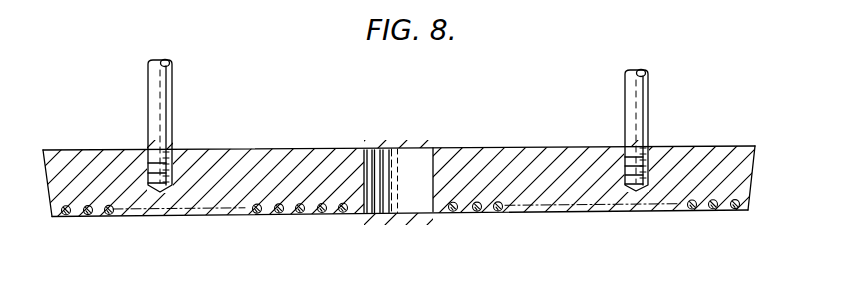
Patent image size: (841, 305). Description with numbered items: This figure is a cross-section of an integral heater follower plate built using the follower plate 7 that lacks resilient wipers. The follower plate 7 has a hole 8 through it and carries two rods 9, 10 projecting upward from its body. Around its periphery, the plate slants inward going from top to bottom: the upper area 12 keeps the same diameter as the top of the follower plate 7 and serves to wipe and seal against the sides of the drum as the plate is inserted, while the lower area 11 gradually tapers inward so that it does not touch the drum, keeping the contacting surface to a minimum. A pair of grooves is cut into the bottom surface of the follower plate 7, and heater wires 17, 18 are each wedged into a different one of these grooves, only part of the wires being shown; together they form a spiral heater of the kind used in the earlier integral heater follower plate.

The follower plate 7 is at (323, 147).
The hole 8 is at (403, 152).
The rod 9 is at (642, 97).
The rod 10 is at (160, 97).
The tapered area 11 is at (749, 187).
The wiping area 12 is at (755, 152).
The heater wire 17 is at (453, 212).
The heater wire 18 is at (478, 212).